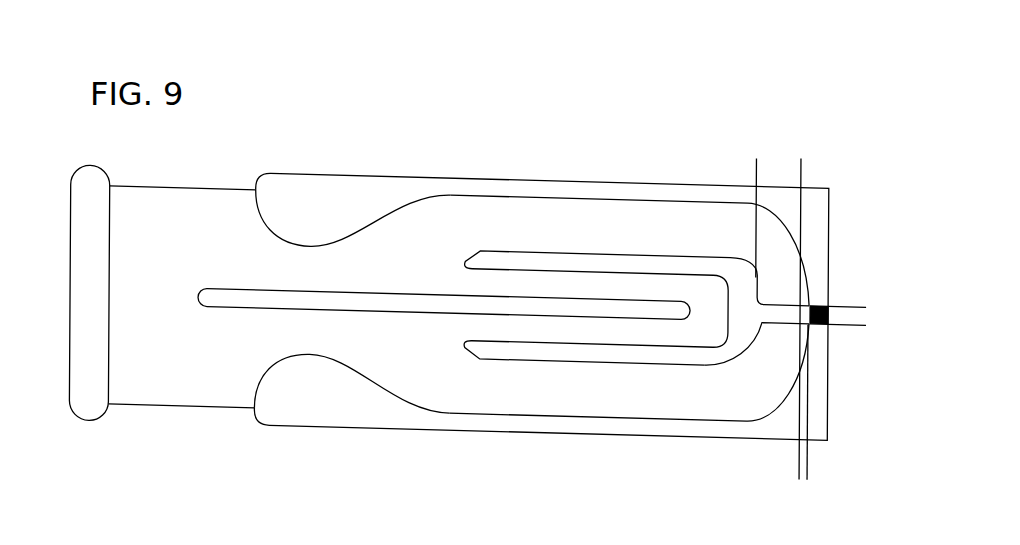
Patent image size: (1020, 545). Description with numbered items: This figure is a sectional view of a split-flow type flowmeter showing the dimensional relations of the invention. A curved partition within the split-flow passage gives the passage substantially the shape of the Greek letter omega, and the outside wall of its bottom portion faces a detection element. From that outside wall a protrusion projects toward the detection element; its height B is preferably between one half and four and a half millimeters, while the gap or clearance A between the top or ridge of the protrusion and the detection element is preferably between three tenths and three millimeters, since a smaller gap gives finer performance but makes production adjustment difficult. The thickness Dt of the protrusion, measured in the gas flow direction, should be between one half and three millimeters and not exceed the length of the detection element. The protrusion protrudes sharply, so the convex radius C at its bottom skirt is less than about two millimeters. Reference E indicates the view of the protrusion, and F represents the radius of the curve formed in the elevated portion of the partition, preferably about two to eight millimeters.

The gap or clearance A is at (763, 448).
The height of the protrusion B is at (735, 146).
The convex radius C is at (762, 311).
The thickness of the protrusion Dt is at (857, 309).
The view of the protrusion E is at (778, 276).
The radius of the curve F is at (770, 200).